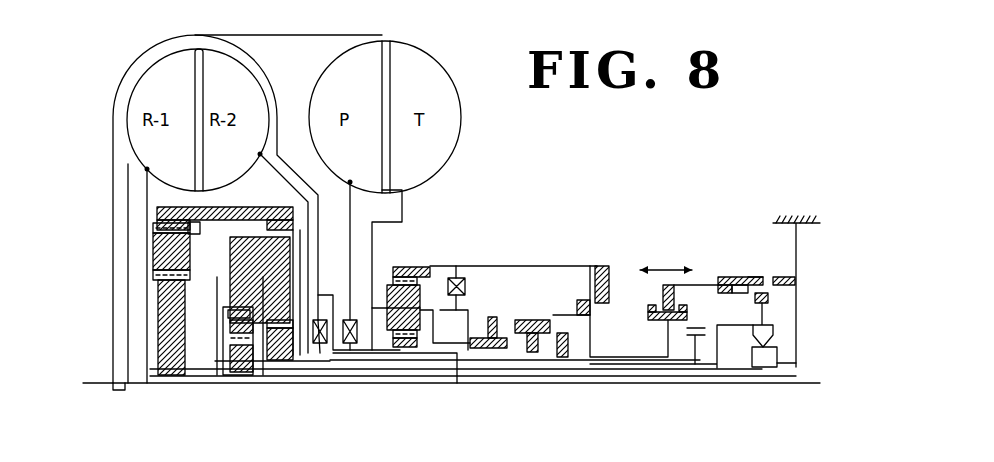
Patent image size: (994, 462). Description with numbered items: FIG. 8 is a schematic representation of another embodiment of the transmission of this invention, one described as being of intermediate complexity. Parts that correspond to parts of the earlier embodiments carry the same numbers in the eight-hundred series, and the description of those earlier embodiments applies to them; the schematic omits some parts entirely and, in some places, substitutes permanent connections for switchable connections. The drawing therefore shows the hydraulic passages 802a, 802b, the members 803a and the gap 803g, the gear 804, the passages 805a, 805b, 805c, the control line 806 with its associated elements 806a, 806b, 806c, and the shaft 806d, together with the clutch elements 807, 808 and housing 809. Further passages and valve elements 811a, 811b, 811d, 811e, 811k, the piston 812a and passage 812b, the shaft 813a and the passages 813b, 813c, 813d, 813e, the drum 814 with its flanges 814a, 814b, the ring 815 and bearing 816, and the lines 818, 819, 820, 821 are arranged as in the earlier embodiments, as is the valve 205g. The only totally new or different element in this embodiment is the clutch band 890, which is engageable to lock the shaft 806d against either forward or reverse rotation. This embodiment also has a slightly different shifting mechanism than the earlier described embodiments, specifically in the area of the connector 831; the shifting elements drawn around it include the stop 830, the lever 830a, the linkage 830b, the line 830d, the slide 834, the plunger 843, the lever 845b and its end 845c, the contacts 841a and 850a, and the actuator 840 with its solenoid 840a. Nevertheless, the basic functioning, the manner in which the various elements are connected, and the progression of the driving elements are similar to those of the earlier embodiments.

The hydraulic passage 802a is at (128, 193).
The hydraulic passage 802b is at (354, 228).
The thrust member 803a is at (403, 348).
The gap 803g is at (370, 345).
The gear 804 is at (388, 300).
The passage 805a is at (403, 210).
The bracket 805b is at (473, 338).
The passage 805c is at (433, 316).
The control line 806 is at (524, 258).
The clutch element 806a is at (240, 375).
The cap 806b is at (405, 267).
The piston 806c is at (604, 266).
The shaft 806d is at (600, 372).
The clutch element 807 is at (282, 362).
The clutch element 808 is at (248, 372).
The housing 809 is at (222, 372).
The valve 811a is at (322, 350).
The passage 811b is at (272, 166).
The line 811d is at (443, 362).
The piston 811e is at (566, 360).
The valve 811k is at (311, 370).
The piston 812a is at (240, 247).
The passage 812b is at (302, 246).
The shaft 813a is at (165, 372).
The passage 813b is at (147, 257).
The housing passage 813c is at (258, 64).
The line 813d is at (446, 362).
The member 813e is at (522, 335).
The drum 814 is at (220, 205).
The drum flange 814a is at (278, 207).
The drum flange 814b is at (173, 220).
The ring 815 is at (194, 236).
The bearing 816 is at (153, 238).
The wall 818 is at (214, 370).
The line 819 is at (640, 377).
The line 820 is at (203, 368).
The base line 821 is at (738, 384).
The valve 205g is at (472, 281).
The stop 830 is at (566, 297).
The lever 830a is at (492, 318).
The linkage 830b is at (588, 282).
The line 830d is at (650, 370).
The connector 831 is at (530, 355).
The slide 834 is at (650, 322).
The actuator 840 is at (764, 380).
The solenoid 840a is at (777, 357).
The contact 841a is at (768, 297).
The plunger 843 is at (663, 296).
The lever 845b is at (722, 277).
The lever end 845c is at (760, 277).
The contact 850a is at (780, 275).
The clutch band 890 is at (696, 327).